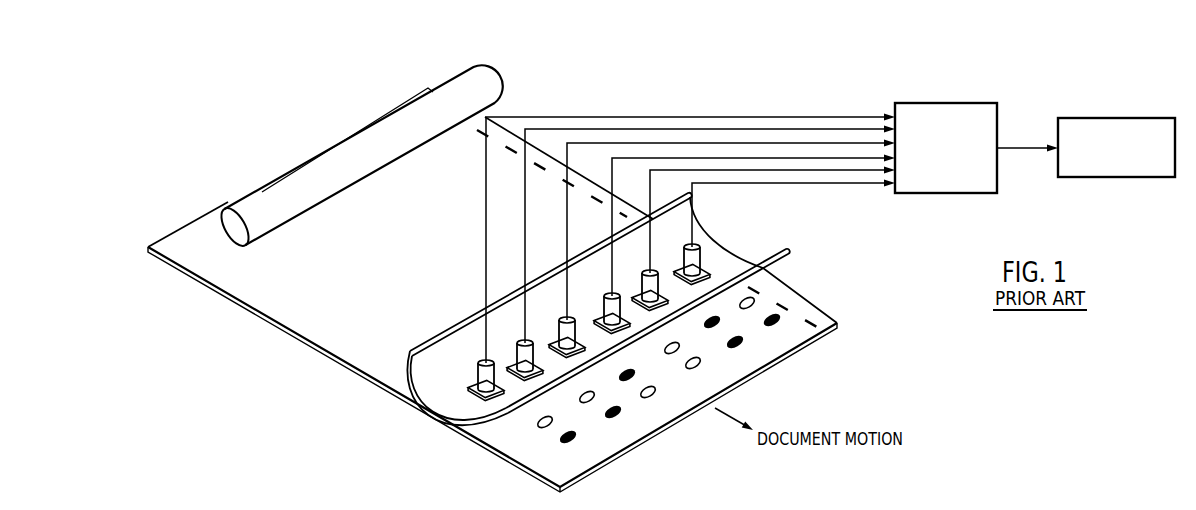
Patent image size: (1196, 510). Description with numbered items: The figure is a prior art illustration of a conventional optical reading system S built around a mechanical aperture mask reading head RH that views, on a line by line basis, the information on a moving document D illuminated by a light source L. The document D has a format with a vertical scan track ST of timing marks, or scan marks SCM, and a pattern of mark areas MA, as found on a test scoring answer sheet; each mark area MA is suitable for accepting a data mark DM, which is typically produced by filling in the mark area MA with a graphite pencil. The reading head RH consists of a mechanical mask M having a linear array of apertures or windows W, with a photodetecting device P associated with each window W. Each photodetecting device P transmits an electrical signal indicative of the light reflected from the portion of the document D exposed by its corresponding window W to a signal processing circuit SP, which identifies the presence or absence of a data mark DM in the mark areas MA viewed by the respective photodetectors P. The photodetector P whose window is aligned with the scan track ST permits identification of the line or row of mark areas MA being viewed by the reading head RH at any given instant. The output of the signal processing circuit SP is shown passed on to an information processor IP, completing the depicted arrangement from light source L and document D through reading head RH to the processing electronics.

The light source L is at (474, 66).
The document D is at (265, 321).
The optical reading system S is at (320, 375).
The scan marks SCM is at (831, 318).
The reading head RH is at (606, 316).
The window W is at (708, 261).
The mechanical mask M is at (408, 360).
The scan track ST is at (774, 284).
The photodetecting device P is at (653, 268).
The mark area MA is at (712, 362).
The data mark DM is at (745, 343).
The signal processing circuit SP is at (966, 103).
The information processor IP is at (1133, 118).